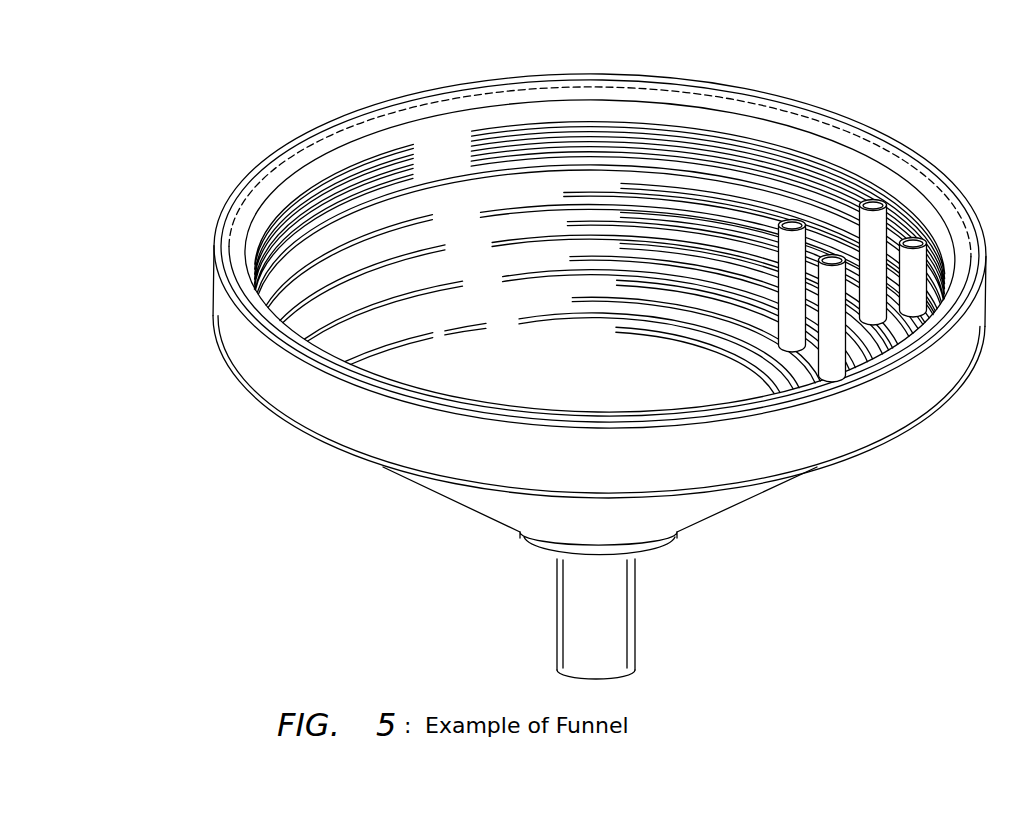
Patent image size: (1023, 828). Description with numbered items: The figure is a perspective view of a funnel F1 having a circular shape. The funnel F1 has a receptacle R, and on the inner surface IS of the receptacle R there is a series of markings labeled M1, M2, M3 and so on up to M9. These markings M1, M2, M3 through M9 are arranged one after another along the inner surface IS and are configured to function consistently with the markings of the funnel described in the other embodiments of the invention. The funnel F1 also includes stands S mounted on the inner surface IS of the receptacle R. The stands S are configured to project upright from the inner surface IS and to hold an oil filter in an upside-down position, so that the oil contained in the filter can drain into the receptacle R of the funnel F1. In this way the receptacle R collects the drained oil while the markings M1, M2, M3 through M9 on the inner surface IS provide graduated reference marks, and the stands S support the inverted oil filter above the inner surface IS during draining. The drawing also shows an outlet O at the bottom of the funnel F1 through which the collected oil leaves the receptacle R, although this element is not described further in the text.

The funnel F1 is at (869, 84).
The receptacle R is at (643, 74).
The inner surface IS is at (621, 332).
The marking M1 is at (460, 321).
The marking M2 is at (441, 280).
The marking M3 is at (428, 242).
The marking M9 is at (488, 119).
The stands S is at (870, 258).
The outlet O is at (640, 626).